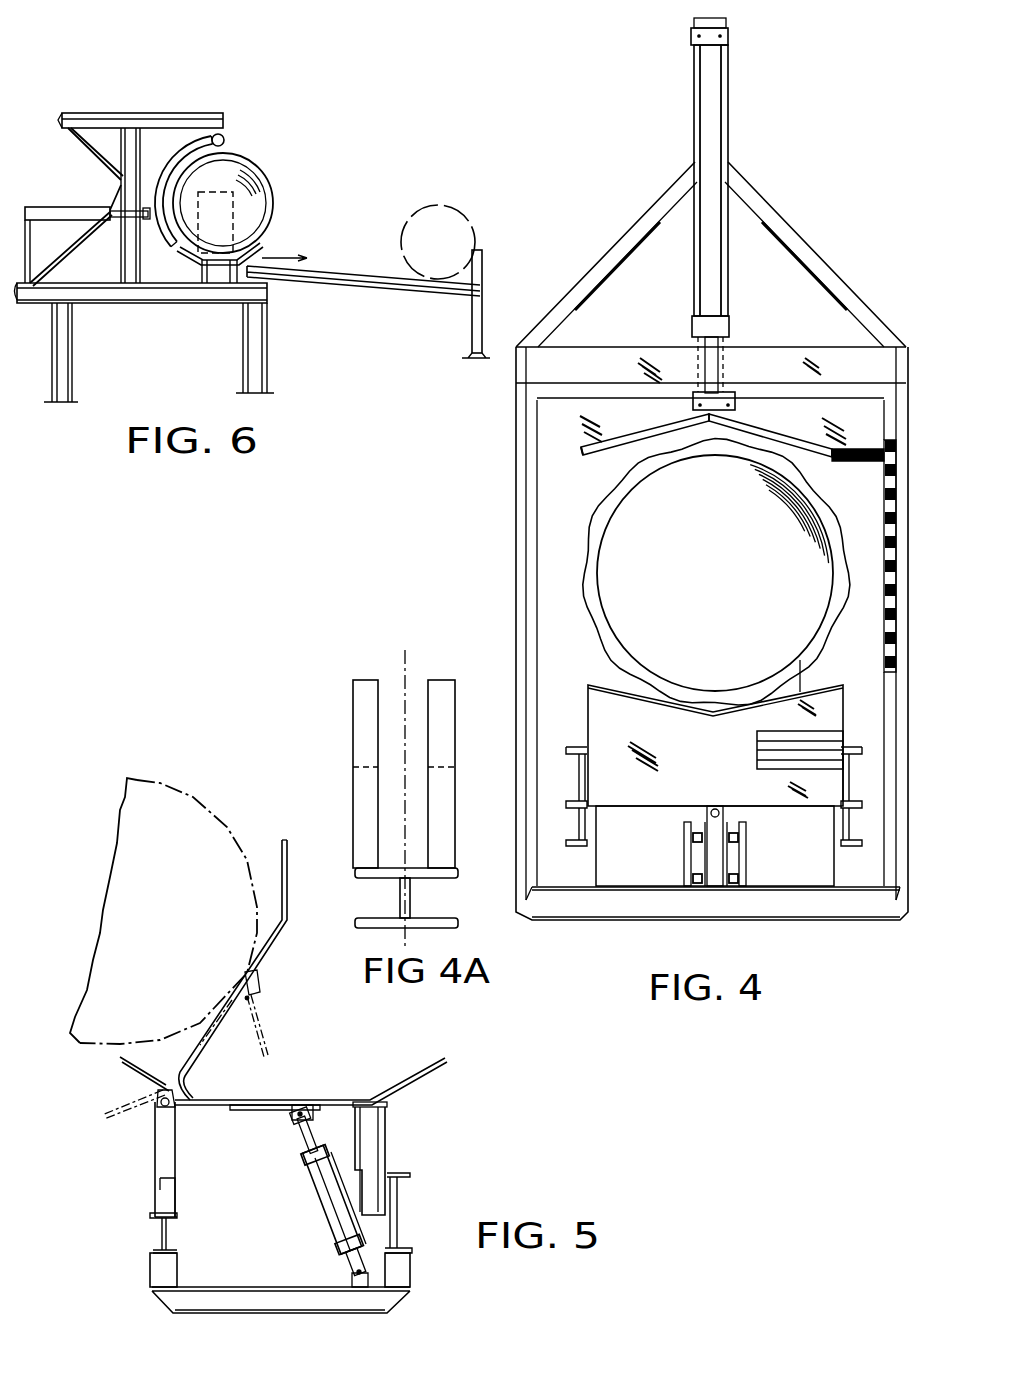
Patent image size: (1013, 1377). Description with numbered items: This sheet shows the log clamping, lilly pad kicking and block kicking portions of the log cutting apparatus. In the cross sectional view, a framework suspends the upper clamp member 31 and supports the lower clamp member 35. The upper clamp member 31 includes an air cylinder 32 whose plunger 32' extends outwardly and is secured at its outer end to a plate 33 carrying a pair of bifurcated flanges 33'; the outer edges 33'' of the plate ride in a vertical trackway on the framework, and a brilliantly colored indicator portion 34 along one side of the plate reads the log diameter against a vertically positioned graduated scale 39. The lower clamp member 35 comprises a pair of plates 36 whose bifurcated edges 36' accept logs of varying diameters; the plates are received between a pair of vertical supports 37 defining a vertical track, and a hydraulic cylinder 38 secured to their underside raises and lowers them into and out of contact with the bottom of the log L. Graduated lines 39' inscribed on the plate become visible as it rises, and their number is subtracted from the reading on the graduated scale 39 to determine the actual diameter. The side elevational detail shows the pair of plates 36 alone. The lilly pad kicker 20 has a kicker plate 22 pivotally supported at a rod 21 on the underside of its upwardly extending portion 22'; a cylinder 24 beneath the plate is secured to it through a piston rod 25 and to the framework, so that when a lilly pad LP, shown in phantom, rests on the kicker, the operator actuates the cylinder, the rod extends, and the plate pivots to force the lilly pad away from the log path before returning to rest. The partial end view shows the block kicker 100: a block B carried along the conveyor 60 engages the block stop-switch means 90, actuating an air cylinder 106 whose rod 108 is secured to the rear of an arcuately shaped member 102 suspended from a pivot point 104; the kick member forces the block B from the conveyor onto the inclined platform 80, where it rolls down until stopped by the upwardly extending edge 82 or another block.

In FIG. 5, the lilly pad kicker 20 is at (383, 1072).
In FIG. 5, the rod 21 is at (152, 1112).
In FIG. 5, the kicker plate 22 is at (233, 970).
In FIG. 5, the upwardly extending portion 22' is at (115, 1088).
In FIG. 5, the cylinder 24 is at (318, 1220).
In FIG. 5, the piston rod 25 is at (270, 1027).
In FIG. 5, the lilly pad LP is at (225, 808).
In FIG. 4, the upper clamp member 31 is at (654, 331).
In FIG. 4, the air cylinder 32 is at (733, 177).
In FIG. 4, the plunger 32' is at (740, 364).
In FIG. 4, the plate 33 is at (713, 385).
In FIG. 4, the bifurcated flanges 33' is at (701, 475).
In FIG. 4, the outer edges 33'' is at (851, 385).
In FIG. 4, the indicator portion 34 is at (884, 462).
In FIG. 4, the lower clamp member 35 is at (851, 723).
In FIG. 4, the plates 36 is at (693, 745).
In FIG. 4A, the plates 36 is at (399, 804).
In FIG. 4, the bifurcated edges 36' is at (715, 671).
In FIG. 4, the vertical supports 37 is at (580, 768).
In FIG. 4, the hydraulic cylinder 38 is at (732, 858).
In FIG. 4, the graduated scale 39 is at (874, 663).
In FIG. 4, the graduated lines 39' is at (790, 740).
In FIG. 4, the log L is at (713, 585).
In FIG. 6, the conveyor 60 is at (216, 280).
In FIG. 6, the inclined platform 80 is at (366, 311).
In FIG. 6, the upwardly extending edge 82 is at (483, 268).
In FIG. 6, the block stop-switch means 90 is at (230, 236).
In FIG. 6, the block kicker 100 is at (246, 122).
In FIG. 6, the arcuately shaped member 102 is at (170, 150).
In FIG. 6, the pivot point 104 is at (226, 140).
In FIG. 6, the air cylinder 106 is at (70, 207).
In FIG. 6, the rod 108 is at (112, 222).
In FIG. 6, the block B is at (273, 198).